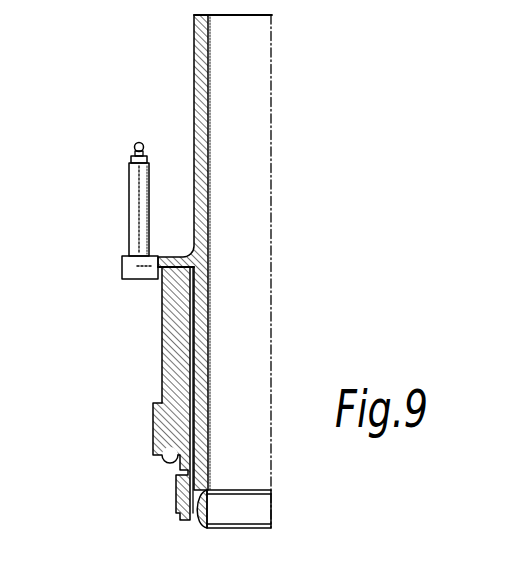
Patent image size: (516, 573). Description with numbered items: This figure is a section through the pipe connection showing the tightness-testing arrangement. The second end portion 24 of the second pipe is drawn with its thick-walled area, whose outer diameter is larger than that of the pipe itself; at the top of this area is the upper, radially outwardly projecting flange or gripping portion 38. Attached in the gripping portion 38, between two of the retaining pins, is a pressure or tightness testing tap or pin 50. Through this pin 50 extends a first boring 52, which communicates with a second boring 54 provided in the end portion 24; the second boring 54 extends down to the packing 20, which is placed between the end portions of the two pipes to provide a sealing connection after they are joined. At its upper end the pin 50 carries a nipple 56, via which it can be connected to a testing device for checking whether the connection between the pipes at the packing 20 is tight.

The packing 20 is at (258, 510).
The second end portion 24 is at (153, 410).
The gripping portion 38 is at (150, 273).
The tightness testing pin 50 is at (104, 194).
The first boring 52 is at (140, 200).
The second boring 54 is at (190, 360).
The nipple 56 is at (134, 151).